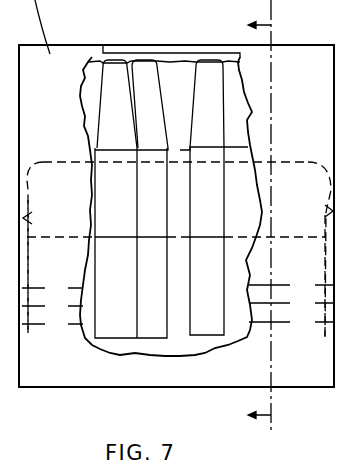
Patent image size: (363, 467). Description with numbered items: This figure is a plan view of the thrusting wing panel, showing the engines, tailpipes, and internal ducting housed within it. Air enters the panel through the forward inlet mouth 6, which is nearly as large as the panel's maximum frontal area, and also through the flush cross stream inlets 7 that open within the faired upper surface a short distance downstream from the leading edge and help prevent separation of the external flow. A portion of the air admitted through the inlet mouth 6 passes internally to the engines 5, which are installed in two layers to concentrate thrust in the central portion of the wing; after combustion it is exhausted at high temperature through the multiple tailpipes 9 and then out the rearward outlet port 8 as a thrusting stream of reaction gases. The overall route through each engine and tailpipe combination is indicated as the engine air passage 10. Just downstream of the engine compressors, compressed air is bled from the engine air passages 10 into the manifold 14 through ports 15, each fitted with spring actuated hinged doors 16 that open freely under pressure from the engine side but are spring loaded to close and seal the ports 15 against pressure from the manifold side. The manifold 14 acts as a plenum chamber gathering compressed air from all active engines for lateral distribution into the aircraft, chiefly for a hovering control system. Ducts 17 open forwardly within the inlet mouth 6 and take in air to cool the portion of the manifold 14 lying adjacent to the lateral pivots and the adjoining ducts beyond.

The engines 5 is at (137, 298).
The thrusting wing panel forward inlet mouth 6 is at (168, 387).
The power panel cross stream inlets 7 is at (81, 324).
The thrusting wing panel rearward outlet port 8 is at (269, 216).
The tailpipes 9 is at (118, 58).
The engine air passage 10 is at (147, 117).
The manifold 14 is at (290, 172).
The ports 15 is at (250, 218).
The spring actuated hinged doors 16 is at (253, 233).
The ducts 17 is at (25, 270).